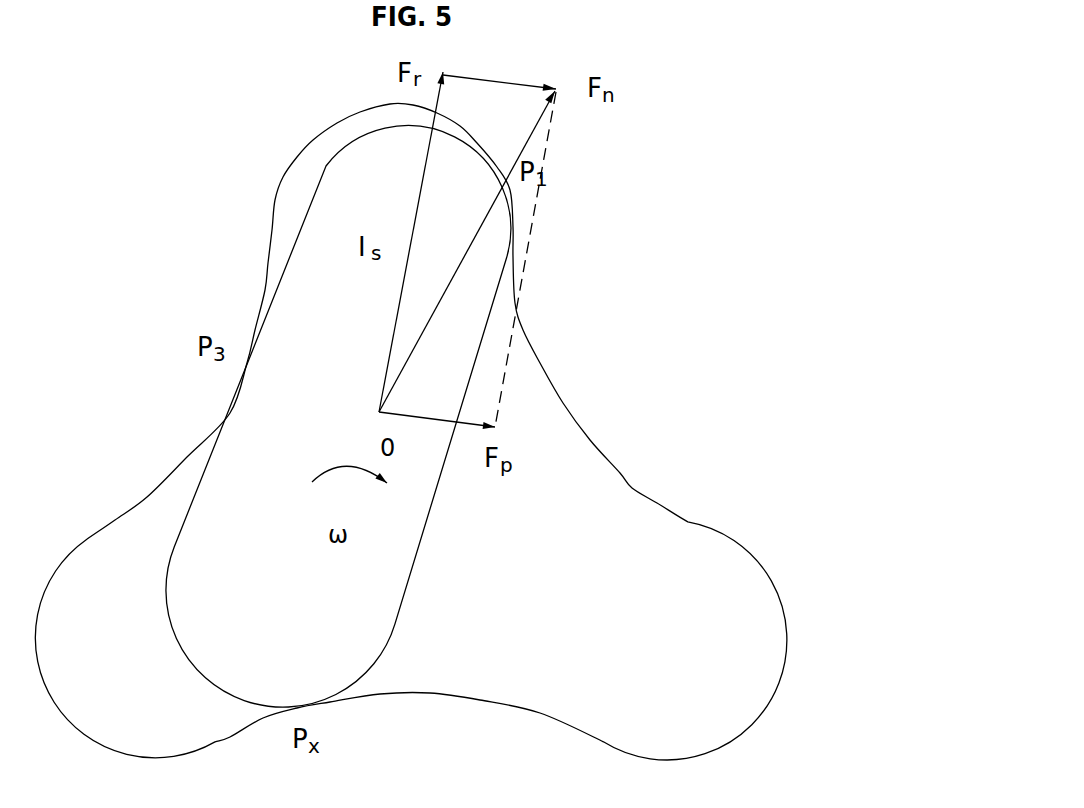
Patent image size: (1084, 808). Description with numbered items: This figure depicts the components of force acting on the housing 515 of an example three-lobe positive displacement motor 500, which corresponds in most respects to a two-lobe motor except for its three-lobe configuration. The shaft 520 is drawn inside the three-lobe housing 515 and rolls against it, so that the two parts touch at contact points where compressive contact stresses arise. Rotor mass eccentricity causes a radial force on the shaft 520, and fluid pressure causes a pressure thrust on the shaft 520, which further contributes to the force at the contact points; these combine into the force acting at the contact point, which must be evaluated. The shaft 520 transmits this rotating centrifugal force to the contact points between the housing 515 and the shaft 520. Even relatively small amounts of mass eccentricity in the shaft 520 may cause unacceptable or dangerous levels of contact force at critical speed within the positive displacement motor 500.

The three-lobe positive displacement motor 500 is at (652, 197).
The housing 515 is at (632, 488).
The shaft 520 is at (173, 543).